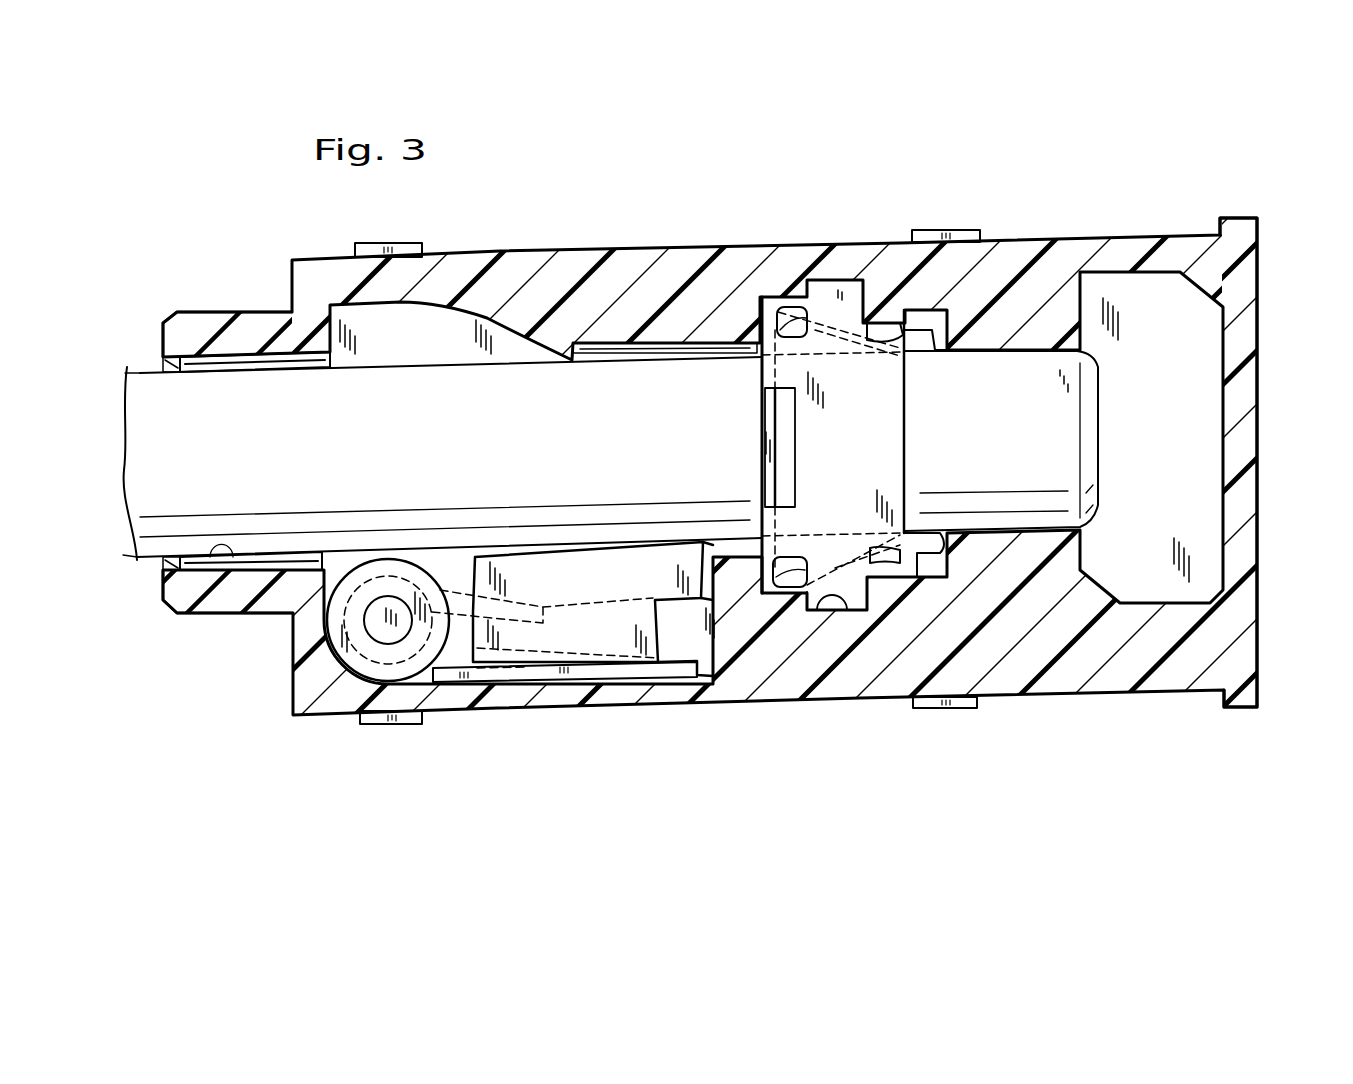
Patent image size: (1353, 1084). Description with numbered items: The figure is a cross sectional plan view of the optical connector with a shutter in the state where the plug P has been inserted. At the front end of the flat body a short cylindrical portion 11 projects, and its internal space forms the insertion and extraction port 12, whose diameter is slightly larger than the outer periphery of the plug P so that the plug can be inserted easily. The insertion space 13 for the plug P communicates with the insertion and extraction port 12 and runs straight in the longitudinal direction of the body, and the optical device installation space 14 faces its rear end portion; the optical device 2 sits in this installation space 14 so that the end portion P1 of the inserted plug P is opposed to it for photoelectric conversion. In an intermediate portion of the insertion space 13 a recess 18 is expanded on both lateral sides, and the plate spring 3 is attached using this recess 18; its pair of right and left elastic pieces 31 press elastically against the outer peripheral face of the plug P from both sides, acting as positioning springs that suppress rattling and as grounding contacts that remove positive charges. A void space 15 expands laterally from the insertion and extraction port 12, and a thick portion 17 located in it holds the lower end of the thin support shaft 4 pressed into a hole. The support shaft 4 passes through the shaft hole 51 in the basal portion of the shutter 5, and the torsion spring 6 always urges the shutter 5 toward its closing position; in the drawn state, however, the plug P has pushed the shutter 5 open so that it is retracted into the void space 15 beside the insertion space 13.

The optical device 2 is at (1197, 530).
The plate spring 3 is at (762, 330).
The support shaft 4 is at (390, 633).
The shutter 5 is at (523, 565).
The torsion spring 6 is at (467, 590).
The cylindrical portion 11 is at (214, 312).
The insertion and extraction port 12 is at (220, 557).
The insertion space 13 is at (677, 343).
The optical device installation space 14 is at (1213, 372).
The void space 15 is at (700, 637).
The thick portion 17 is at (463, 673).
The recess 18 is at (840, 297).
The elastic pieces 31 is at (880, 325).
The shaft hole 51 is at (373, 628).
The plug P is at (125, 367).
The end portion of the plug P1 is at (1090, 392).